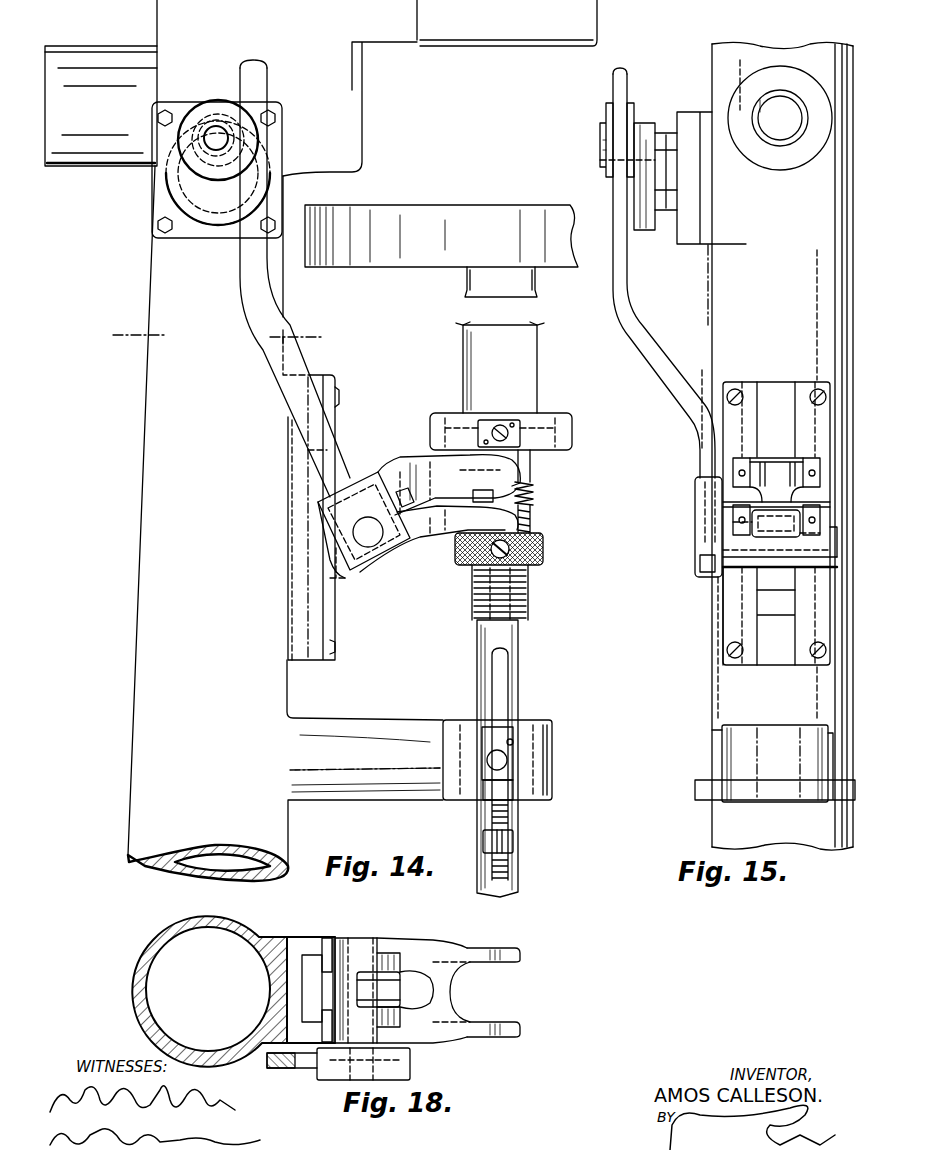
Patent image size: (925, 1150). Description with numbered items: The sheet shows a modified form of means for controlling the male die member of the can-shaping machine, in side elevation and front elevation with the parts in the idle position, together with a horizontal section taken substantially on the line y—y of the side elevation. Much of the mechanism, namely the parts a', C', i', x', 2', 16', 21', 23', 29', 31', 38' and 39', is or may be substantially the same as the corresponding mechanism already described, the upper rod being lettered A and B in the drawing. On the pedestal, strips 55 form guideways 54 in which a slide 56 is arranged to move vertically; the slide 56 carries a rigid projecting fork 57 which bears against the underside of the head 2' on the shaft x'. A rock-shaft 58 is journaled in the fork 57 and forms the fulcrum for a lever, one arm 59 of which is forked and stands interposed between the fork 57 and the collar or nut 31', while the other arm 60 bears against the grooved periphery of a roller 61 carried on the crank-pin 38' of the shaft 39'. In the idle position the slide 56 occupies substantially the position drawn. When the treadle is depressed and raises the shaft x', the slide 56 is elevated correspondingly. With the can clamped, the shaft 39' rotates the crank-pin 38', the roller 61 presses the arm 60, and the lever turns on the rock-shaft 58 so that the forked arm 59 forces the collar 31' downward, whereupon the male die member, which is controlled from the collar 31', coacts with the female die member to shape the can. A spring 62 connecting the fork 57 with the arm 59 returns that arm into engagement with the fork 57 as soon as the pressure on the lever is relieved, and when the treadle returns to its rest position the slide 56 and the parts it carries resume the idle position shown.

In FIG. 14, the crank-pin 38' is at (215, 113).
In FIG. 15, the crank-pin 38' is at (615, 186).
In FIG. 14, the shaft 39' is at (217, 187).
In FIG. 14, the roller 61 is at (240, 120).
In FIG. 15, the roller 61 is at (608, 177).
In FIG. 14, the arm of lever 60 is at (272, 352).
In FIG. 15, the arm of lever 60 is at (663, 380).
In FIG. 18, the arm of lever 60 is at (303, 1068).
In FIG. 14, the section line y- y is at (214, 335).
In FIG. 14, the fork 57 is at (417, 466).
In FIG. 15, the fork 57 is at (737, 480).
In FIG. 18, the fork 57 is at (470, 950).
In FIG. 14, the forked arm of lever 59 is at (438, 535).
In FIG. 15, the forked arm of lever 59 is at (737, 530).
In FIG. 18, the forked arm of lever 59 is at (422, 942).
In FIG. 14, the rock-shaft 58 is at (370, 552).
In FIG. 15, the rock-shaft 58 is at (837, 552).
In FIG. 18, the rock-shaft 58 is at (372, 940).
In FIG. 14, the slide 56 is at (336, 568).
In FIG. 15, the slide 56 is at (767, 590).
In FIG. 18, the slide 56 is at (317, 993).
In FIG. 14, the strips 55 is at (335, 622).
In FIG. 15, the strips 55 is at (737, 623).
In FIG. 18, the strips 55 is at (337, 947).
In FIG. 15, the guideways 54 is at (770, 660).
In FIG. 18, the guideways 54 is at (310, 957).
In FIG. 14, the frame part a' is at (321, 440).
In FIG. 15, the frame part a' is at (762, 446).
In FIG. 18, the frame part a' is at (233, 986).
In FIG. 14, the rod A is at (537, 368).
In FIG. 14, the rod upper end B is at (466, 330).
In FIG. 14, the part 16' is at (521, 431).
In FIG. 14, the head 2' is at (540, 468).
In FIG. 14, the spring 62 is at (535, 490).
In FIG. 14, the part 29' is at (545, 519).
In FIG. 14, the collar or nut 31' is at (516, 576).
In FIG. 14, the shaft x' is at (513, 758).
In FIG. 14, the part 21' is at (524, 764).
In FIG. 14, the part c' C' is at (464, 773).
In FIG. 15, the part c' C' is at (775, 763).
In FIG. 14, the part 23' is at (523, 848).
In FIG. 14, the part i' is at (441, 251).